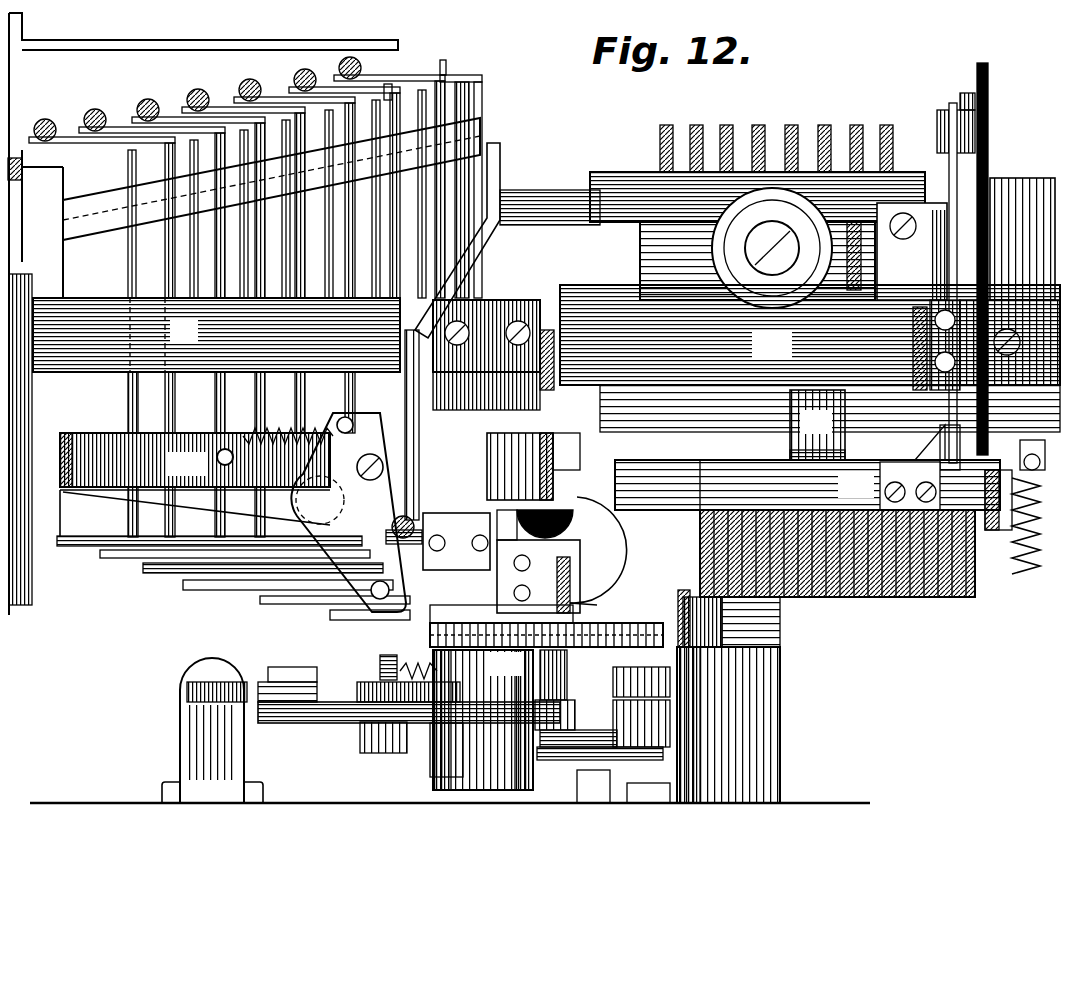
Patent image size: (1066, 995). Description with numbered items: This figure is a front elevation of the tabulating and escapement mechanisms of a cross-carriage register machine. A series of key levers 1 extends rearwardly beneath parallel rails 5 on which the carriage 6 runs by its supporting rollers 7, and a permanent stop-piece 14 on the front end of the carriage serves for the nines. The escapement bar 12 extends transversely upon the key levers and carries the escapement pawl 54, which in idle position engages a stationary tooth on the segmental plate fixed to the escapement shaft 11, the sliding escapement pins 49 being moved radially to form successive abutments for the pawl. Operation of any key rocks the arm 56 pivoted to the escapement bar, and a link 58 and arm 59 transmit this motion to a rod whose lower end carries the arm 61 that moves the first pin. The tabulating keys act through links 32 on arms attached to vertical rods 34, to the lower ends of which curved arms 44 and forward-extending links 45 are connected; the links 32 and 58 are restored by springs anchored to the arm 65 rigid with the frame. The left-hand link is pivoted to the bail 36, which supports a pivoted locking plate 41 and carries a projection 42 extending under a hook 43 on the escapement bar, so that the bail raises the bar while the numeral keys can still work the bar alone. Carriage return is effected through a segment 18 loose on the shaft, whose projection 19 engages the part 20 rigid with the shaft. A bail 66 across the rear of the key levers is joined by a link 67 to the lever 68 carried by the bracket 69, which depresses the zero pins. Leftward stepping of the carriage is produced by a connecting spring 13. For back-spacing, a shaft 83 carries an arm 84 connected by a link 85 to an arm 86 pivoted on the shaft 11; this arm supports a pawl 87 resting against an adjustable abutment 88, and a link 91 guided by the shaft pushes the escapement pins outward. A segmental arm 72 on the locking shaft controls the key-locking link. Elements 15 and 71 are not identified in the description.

The arm 65 is at (203, 31).
The links 32 is at (237, 100).
The link 58 is at (398, 78).
The arm 59 is at (449, 68).
The bail 36 is at (271, 179).
The vertical rods 34 is at (305, 306).
The arm 61 is at (400, 330).
The rails 5 is at (216, 335).
The locking plate 41 is at (404, 408).
The arm 86 is at (196, 457).
The escapement pawl 54 is at (356, 512).
The curved arm 44 is at (140, 547).
The link 45 is at (212, 560).
The projection 42 is at (487, 470).
The hook 43 is at (456, 540).
The escapement pins 49 is at (566, 522).
The escapement bar 12 is at (560, 561).
The arm 56 is at (597, 605).
The link 91 is at (678, 610).
The projection 19 is at (675, 633).
The segment 18 is at (605, 674).
The connecting spring 13 is at (483, 720).
The arm 20 is at (562, 705).
The shaft 83 is at (641, 723).
The arm 84 is at (597, 760).
The link 85 is at (410, 740).
The escapement shaft 11 is at (450, 792).
The adjustable abutment 88 is at (214, 690).
The pawl 87 is at (247, 692).
The supporting rollers 7 is at (757, 216).
The lever 68 is at (955, 110).
The bracket 69 is at (988, 118).
The stop-piece 14 is at (1022, 226).
The carriage 6 is at (1010, 307).
The link 67 is at (950, 300).
The shaft 15 is at (810, 358).
The segmental arm 72 is at (913, 335).
The key 71 is at (817, 425).
The bail 66 is at (807, 485).
The key levers 1 is at (868, 597).